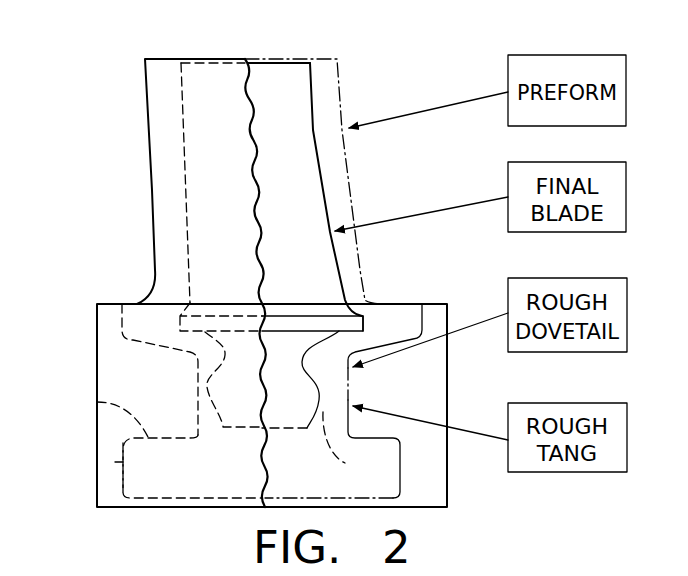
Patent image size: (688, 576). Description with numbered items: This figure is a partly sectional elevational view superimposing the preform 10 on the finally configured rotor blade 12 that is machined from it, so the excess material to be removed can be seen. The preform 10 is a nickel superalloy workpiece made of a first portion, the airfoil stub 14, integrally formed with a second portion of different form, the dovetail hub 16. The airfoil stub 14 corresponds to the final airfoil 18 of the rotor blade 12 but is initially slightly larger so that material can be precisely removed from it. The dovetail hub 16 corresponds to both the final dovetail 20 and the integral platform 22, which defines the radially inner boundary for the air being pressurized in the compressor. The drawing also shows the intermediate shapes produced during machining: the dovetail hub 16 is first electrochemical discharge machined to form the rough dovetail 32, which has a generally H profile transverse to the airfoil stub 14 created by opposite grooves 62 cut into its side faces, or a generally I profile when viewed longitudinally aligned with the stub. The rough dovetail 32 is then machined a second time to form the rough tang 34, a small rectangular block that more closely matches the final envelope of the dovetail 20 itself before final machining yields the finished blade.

The preform 10 is at (136, 68).
The rotor blade 12 is at (272, 60).
The airfoil stub 14 is at (224, 134).
The dovetail hub 16 is at (227, 473).
The airfoil 18 is at (296, 134).
The dovetail 20 is at (306, 406).
The platform 22 is at (366, 324).
The rough dovetail 32 is at (121, 465).
The rough tang 34 is at (354, 446).
The groove 62 is at (97, 402).